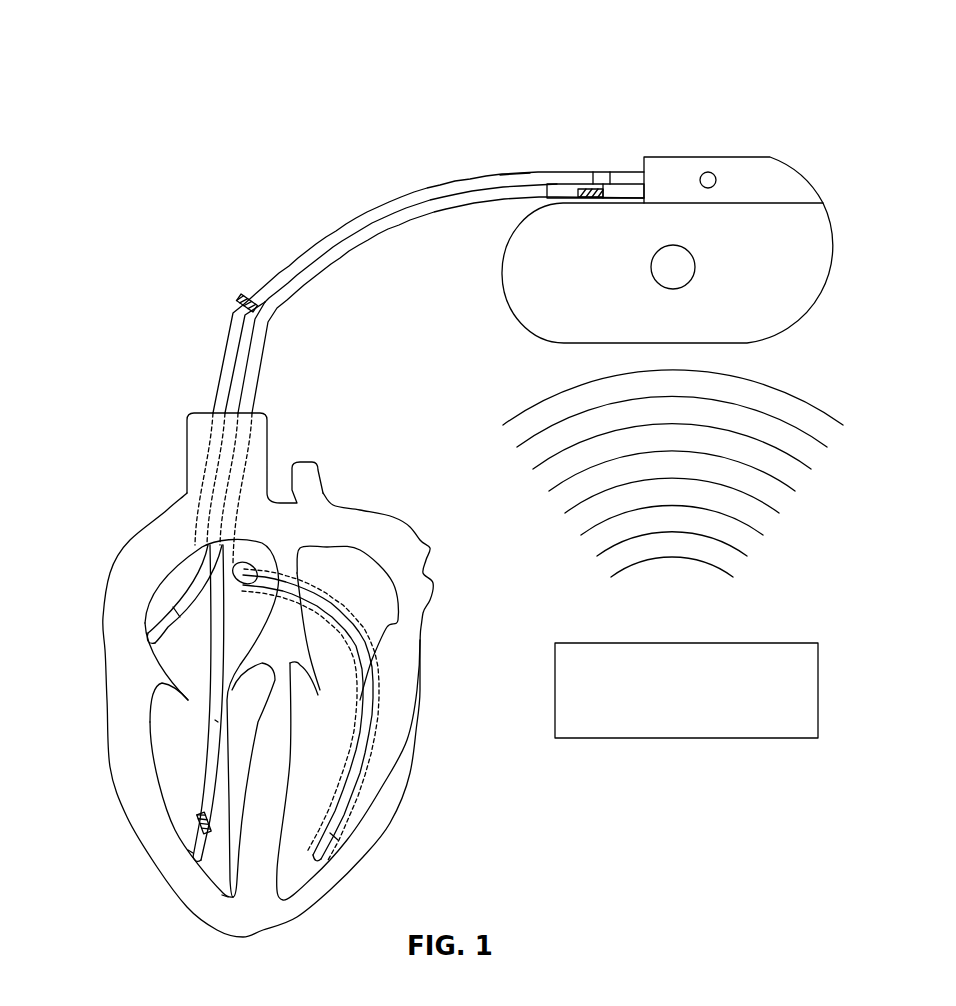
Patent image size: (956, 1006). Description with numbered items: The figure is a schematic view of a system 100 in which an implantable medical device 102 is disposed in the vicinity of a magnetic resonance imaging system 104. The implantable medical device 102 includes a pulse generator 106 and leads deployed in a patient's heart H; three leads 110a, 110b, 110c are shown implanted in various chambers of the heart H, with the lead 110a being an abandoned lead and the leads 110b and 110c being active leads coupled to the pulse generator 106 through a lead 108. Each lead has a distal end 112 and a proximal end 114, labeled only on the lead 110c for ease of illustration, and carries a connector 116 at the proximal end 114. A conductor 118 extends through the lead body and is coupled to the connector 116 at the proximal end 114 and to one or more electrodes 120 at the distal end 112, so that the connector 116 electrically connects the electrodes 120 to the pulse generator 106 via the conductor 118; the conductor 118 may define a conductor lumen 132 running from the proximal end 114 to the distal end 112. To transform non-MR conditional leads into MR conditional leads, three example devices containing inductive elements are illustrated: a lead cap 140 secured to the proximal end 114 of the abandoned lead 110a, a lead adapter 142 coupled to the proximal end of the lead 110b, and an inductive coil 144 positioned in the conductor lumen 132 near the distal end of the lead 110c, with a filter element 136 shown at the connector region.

The system 100 is at (193, 75).
The implantable medical device 102 is at (808, 320).
The magnetic resonance imaging system 104 is at (717, 738).
The pulse generator 106 is at (735, 157).
The lead 108 is at (326, 207).
The lead 110a is at (178, 597).
The lead 110b is at (363, 787).
The lead 110c is at (215, 747).
The distal end 112 is at (198, 836).
The proximal end 114 is at (514, 174).
The connector 116 is at (620, 180).
The conductor 118 is at (378, 723).
The electrode 120 is at (193, 847).
The conductor lumen 132 is at (217, 720).
The filter element 136 is at (578, 187).
The lead cap 140 is at (249, 300).
The lead adapter 142 is at (595, 187).
The inductive coil 144 is at (225, 897).
The heart H is at (423, 627).